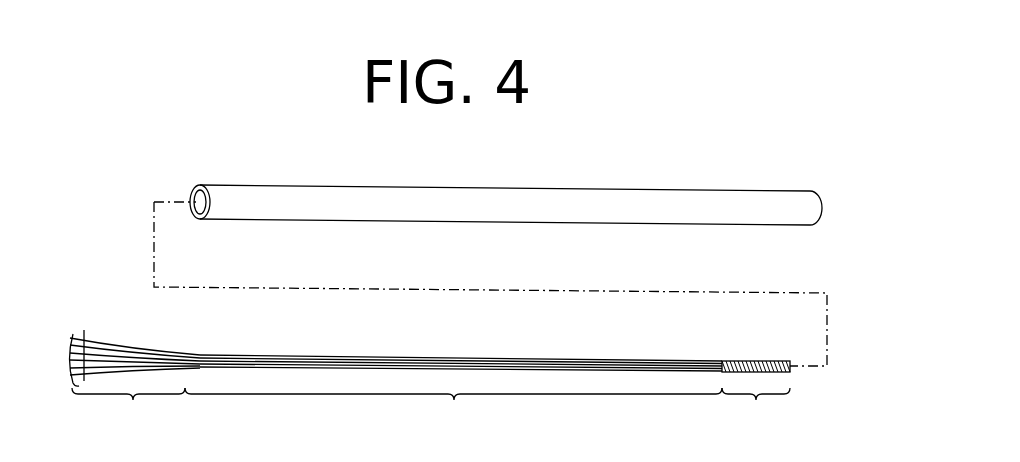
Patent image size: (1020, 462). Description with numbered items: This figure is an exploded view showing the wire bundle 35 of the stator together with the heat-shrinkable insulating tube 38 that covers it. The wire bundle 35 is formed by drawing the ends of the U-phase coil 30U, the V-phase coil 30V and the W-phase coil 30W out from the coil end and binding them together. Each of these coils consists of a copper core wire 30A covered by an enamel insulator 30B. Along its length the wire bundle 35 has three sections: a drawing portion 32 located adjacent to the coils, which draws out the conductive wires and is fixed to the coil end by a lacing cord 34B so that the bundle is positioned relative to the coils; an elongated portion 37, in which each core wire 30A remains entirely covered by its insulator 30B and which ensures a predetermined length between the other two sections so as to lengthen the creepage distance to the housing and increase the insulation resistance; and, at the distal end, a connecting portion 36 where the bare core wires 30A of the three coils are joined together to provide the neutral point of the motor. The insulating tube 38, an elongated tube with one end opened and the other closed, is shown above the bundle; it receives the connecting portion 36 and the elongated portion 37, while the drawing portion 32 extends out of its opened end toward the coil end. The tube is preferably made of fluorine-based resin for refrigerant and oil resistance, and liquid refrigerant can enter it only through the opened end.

The insulating tube 38 is at (610, 197).
The lacing cord 34B is at (95, 320).
The wire bundle 35 is at (396, 337).
The W-phase coil 30W is at (428, 360).
The V-phase coil 30V is at (495, 360).
The U-phase coil 30U is at (560, 359).
The insulator 30B is at (633, 358).
The core wire 30A is at (753, 360).
The drawing portion 32 is at (128, 410).
The elongated portion 37 is at (453, 410).
The connecting portion 36 is at (756, 411).